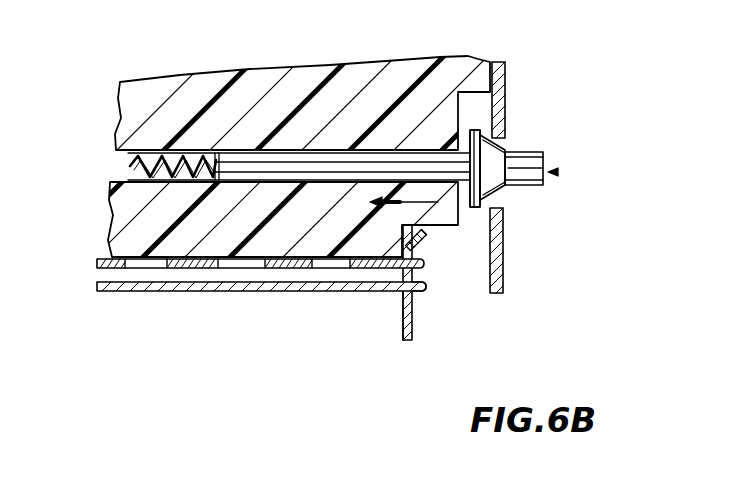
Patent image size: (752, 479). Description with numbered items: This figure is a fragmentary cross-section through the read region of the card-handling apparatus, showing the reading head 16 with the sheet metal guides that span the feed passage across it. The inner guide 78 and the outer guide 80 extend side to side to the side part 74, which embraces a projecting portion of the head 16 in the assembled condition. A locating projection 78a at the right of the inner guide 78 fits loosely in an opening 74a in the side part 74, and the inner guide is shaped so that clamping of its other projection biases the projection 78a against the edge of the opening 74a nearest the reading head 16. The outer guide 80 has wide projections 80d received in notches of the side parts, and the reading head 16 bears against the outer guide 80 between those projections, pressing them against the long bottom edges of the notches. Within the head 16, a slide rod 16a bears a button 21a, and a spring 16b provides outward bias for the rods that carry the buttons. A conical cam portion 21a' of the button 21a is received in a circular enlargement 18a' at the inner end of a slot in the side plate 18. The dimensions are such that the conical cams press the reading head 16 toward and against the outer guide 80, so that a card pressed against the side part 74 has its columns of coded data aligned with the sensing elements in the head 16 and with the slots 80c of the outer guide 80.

The reading head 16 is at (375, 62).
The slide rod 16a is at (262, 166).
The spring 16b is at (127, 160).
The side plate 18 is at (504, 79).
The circular enlargement 18a' is at (545, 247).
The button 21a is at (412, 168).
The conical cam portion 21a' is at (491, 231).
The side part 74 is at (403, 333).
The opening 74a is at (402, 300).
The inner guide 78 is at (117, 293).
The locating projection 78a is at (427, 296).
The outer guide 80 is at (113, 259).
The slots 80c is at (227, 268).
The wide projections 80d is at (424, 266).